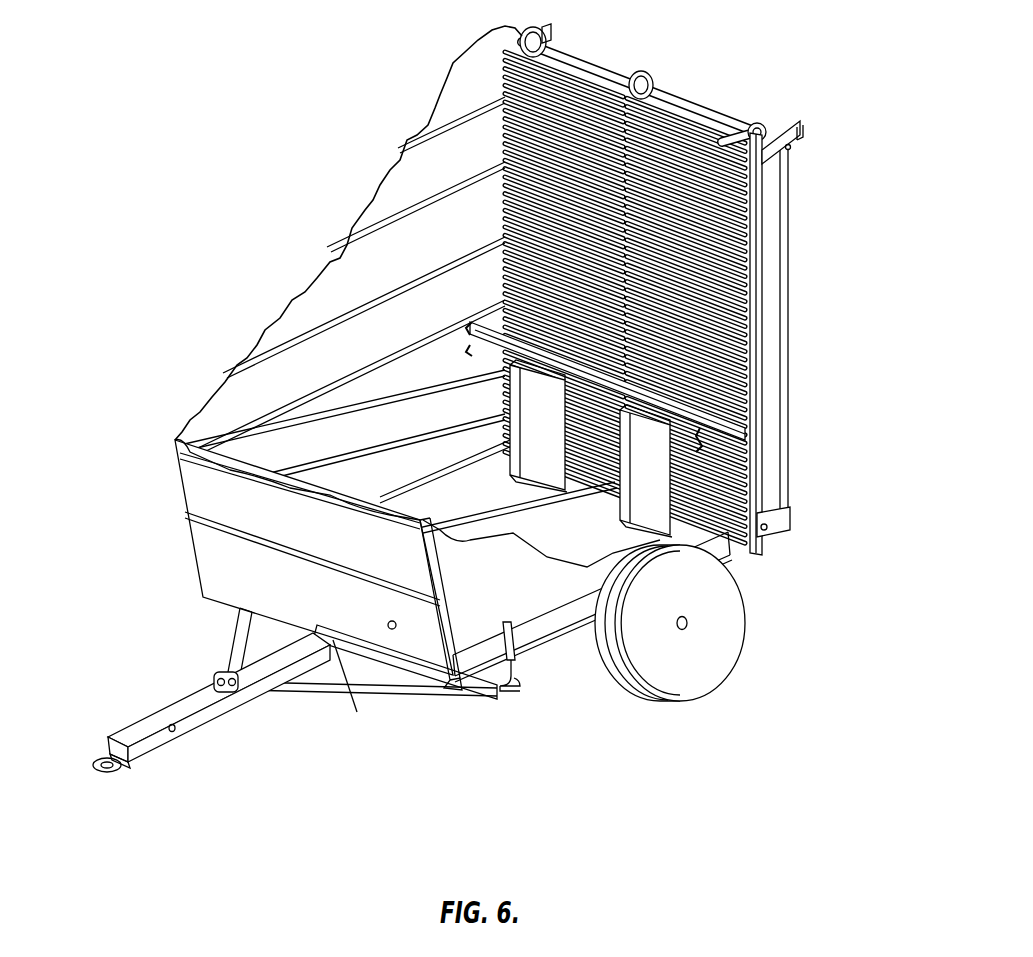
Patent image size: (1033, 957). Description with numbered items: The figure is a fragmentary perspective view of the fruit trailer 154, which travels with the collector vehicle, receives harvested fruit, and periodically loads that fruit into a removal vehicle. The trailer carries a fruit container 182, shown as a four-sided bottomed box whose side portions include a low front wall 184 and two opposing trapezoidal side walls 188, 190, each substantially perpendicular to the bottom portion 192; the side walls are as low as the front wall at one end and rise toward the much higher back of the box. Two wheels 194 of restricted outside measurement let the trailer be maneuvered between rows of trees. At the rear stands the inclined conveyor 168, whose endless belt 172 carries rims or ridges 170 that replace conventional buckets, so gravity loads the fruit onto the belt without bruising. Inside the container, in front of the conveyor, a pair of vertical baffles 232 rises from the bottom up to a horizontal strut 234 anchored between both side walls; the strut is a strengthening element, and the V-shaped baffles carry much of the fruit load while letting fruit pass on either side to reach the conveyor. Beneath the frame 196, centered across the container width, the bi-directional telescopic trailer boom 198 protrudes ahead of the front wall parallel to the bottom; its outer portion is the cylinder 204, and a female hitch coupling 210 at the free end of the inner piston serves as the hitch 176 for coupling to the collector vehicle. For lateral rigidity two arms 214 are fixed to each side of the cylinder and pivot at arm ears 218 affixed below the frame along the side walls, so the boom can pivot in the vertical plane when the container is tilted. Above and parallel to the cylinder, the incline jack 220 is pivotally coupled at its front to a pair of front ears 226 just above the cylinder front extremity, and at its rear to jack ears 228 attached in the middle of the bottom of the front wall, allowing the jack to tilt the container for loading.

The fruit trailer 154 is at (689, 281).
The inclined conveyor 168 is at (689, 289).
The ridges 170 is at (747, 222).
The endless belt 172 is at (775, 333).
The hitch 176 is at (117, 730).
The fruit container 182 is at (217, 374).
The front wall 184 is at (203, 555).
The side wall 188 is at (473, 627).
The side wall 190 is at (372, 178).
The bottom portion 192 is at (736, 632).
The wheels 194 is at (694, 654).
The frame 196 is at (562, 638).
The trailer boom 198 is at (248, 712).
The cylinder 204 is at (143, 753).
The female hitch coupling 210 is at (97, 757).
The arms 214 is at (313, 703).
The arm ears 218 is at (507, 688).
The incline jack 220 is at (272, 641).
The front ears 226 is at (216, 680).
The jack ears 228 is at (357, 712).
The baffles 232 is at (643, 467).
The horizontal strut 234 is at (568, 447).